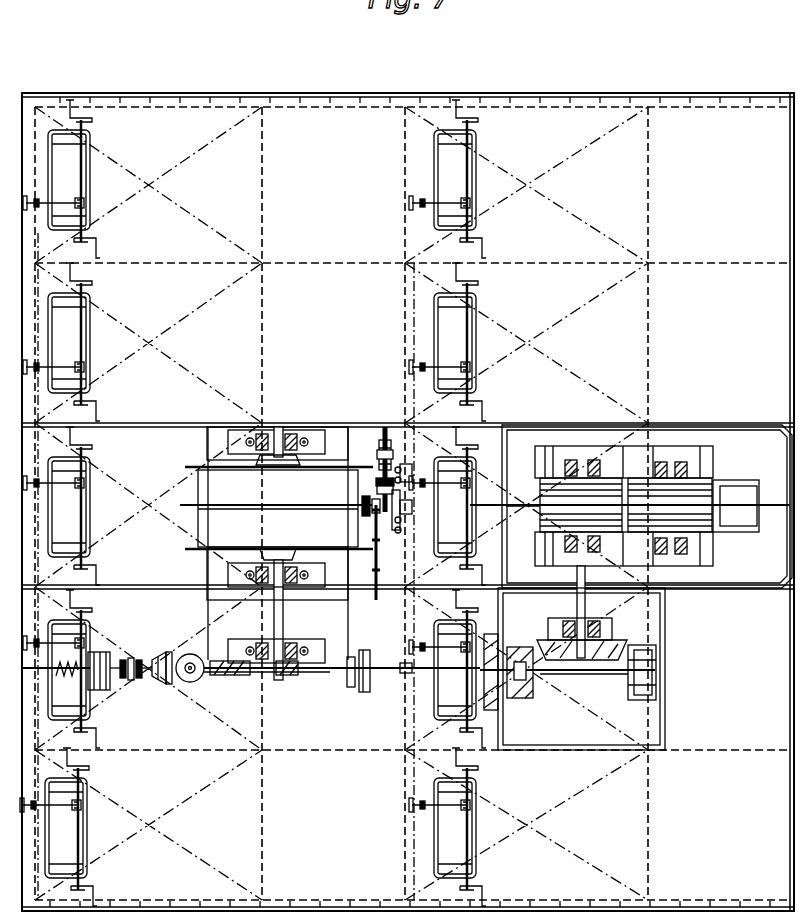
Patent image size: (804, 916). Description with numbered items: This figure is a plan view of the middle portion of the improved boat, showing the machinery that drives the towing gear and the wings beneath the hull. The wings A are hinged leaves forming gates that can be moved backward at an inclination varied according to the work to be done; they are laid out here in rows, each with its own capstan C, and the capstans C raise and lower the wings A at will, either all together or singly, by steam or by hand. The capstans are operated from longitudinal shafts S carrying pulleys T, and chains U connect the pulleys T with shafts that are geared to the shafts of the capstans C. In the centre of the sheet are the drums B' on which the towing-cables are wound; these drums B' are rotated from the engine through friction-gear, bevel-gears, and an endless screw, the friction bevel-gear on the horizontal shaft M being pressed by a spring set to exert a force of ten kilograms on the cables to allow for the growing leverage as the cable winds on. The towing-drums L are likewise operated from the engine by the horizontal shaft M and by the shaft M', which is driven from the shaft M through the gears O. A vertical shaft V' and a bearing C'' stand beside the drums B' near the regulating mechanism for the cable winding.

The wings A is at (412, 503).
The capstans C is at (248, 505).
The chains U is at (256, 503).
The drums B' is at (280, 553).
The horizontal shaft M is at (260, 672).
The vertical shaft V' is at (386, 522).
The pulleys T is at (388, 483).
The bearing C'' is at (390, 511).
The towing-drums L is at (631, 541).
The longitudinal shafts S is at (515, 505).
The shaft M' is at (572, 669).
The gears O is at (520, 659).